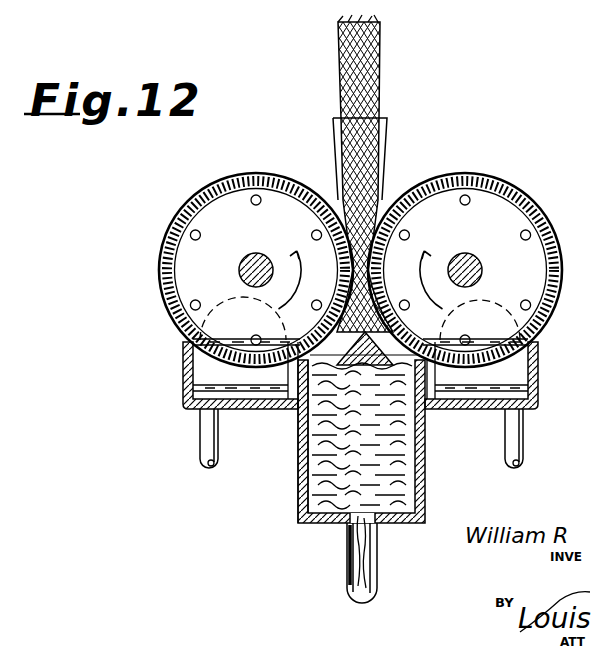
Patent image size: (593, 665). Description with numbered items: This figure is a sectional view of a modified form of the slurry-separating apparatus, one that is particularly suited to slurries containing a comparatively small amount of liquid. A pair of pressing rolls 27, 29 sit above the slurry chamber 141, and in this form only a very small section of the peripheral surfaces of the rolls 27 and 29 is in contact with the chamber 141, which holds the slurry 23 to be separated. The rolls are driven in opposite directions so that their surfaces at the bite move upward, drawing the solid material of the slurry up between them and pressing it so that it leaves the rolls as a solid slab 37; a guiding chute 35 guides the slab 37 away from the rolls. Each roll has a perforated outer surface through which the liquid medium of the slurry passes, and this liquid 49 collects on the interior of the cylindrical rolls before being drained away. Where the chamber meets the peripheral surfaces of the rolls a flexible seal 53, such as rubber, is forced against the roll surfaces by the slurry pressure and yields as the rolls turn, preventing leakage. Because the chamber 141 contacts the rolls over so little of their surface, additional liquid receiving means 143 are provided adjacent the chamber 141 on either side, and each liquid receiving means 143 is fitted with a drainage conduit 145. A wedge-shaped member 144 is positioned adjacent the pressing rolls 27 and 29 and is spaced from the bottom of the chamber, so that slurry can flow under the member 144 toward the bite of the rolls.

The solid slab 37 is at (378, 60).
The guiding chute 35 is at (384, 141).
The pressing roll 29 is at (243, 193).
The pressing roll 27 is at (497, 203).
The liquid 49 is at (487, 338).
The liquid receiving means 143 is at (185, 375).
The seal 53 is at (292, 377).
The drainage conduit 145 is at (203, 437).
The wedge-shaped member 144 is at (298, 433).
The chamber 141 is at (365, 481).
The treating liquid 23 is at (424, 487).